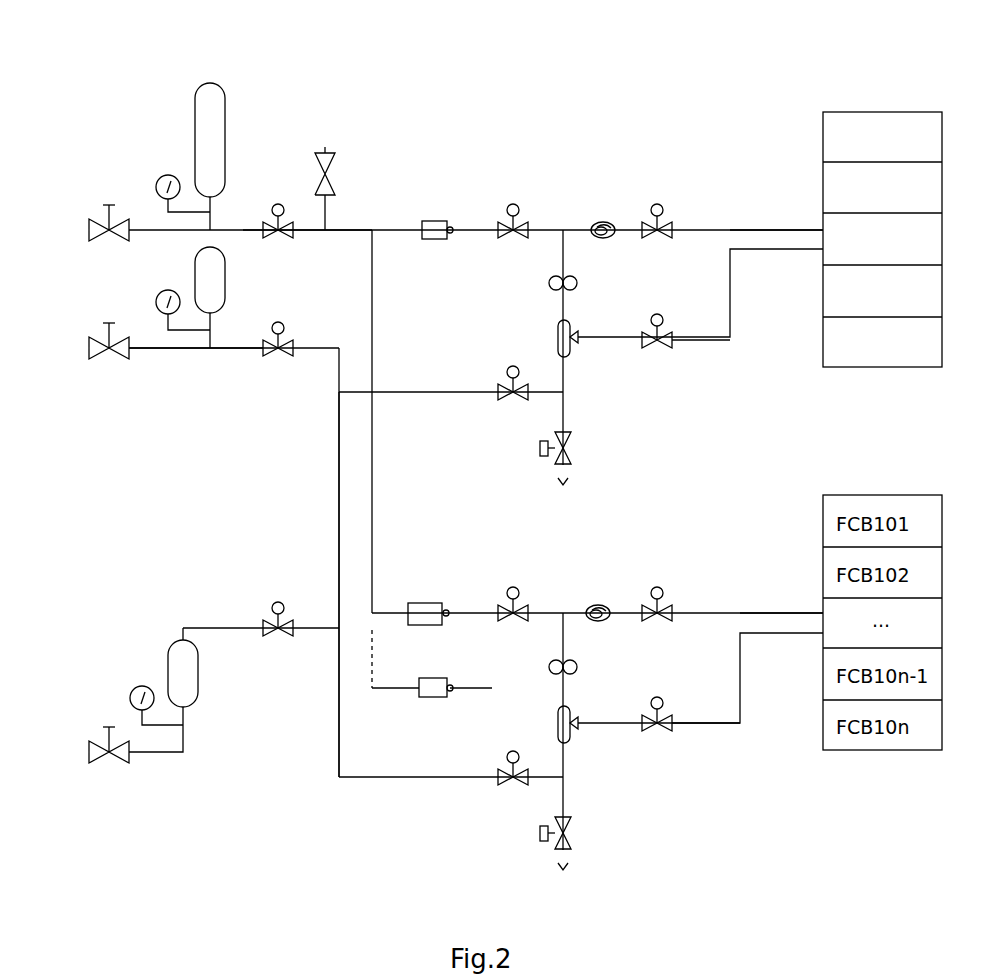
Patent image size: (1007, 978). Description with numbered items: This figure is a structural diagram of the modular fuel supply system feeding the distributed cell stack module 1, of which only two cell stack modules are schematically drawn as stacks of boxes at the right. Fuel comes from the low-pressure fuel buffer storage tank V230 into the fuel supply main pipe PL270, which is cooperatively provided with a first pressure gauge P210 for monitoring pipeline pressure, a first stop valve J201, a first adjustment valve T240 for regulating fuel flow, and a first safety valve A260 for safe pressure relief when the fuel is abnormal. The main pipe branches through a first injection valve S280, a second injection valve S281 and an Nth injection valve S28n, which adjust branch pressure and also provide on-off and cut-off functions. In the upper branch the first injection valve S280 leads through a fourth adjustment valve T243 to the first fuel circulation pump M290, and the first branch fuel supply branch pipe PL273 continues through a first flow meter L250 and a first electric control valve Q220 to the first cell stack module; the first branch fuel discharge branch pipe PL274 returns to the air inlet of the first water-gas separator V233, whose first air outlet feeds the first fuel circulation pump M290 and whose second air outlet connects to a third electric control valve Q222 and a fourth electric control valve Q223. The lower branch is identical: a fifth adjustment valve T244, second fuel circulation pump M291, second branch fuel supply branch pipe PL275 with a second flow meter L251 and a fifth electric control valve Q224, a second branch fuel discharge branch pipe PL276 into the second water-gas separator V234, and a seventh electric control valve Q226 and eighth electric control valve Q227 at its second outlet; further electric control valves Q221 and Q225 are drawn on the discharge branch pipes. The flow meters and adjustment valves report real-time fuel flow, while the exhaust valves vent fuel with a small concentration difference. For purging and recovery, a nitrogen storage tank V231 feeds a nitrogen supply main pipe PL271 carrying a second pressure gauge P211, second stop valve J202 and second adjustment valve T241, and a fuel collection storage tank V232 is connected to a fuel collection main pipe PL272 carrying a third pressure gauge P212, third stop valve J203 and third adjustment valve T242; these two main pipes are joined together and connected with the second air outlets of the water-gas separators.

The distributed cell stack module 1 is at (912, 112).
The first stop valve J201 is at (109, 205).
The second stop valve J202 is at (109, 323).
The third stop valve J203 is at (109, 727).
The first pressure gauge P210 is at (168, 177).
The second pressure gauge P211 is at (168, 290).
The third pressure gauge P212 is at (142, 686).
The low-pressure fuel buffer storage tank V230 is at (208, 83).
The nitrogen storage tank V231 is at (285, 300).
The fuel collection storage tank V232 is at (258, 665).
The first adjustment valve T240 is at (280, 203).
The second adjustment valve T241 is at (290, 357).
The third adjustment valve T242 is at (278, 600).
The fourth adjustment valve T243 is at (575, 190).
The fifth adjustment valve T244 is at (575, 558).
The first safety valve A260 is at (325, 153).
The fuel supply main pipe PL270 is at (250, 240).
The nitrogen supply main pipe PL271 is at (178, 352).
The fuel collection main pipe PL272 is at (332, 625).
The first branch fuel supply branch pipe PL273 is at (805, 190).
The first branch fuel discharge branch pipe PL274 is at (760, 360).
The second branch fuel supply branch pipe PL275 is at (805, 575).
The second branch fuel discharge branch pipe PL276 is at (695, 725).
The first injection valve S280 is at (485, 195).
The second injection valve S281 is at (470, 580).
The sensor S28n is at (490, 656).
The first flow meter L250 is at (640, 190).
The second flow meter L251 is at (598, 604).
The first electric control valve Q220 is at (720, 190).
The valve Q221 is at (720, 303).
The third electric control valve Q222 is at (513, 364).
The fourth electric control valve Q223 is at (640, 436).
The fifth electric control valve Q224 is at (700, 570).
The valve Q225 is at (700, 672).
The seventh electric control valve Q226 is at (513, 750).
The eighth electric control valve Q227 is at (640, 817).
The first fuel circulation pump M290 is at (556, 280).
The second fuel circulation pump M291 is at (556, 664).
The first water-gas separator V233 is at (625, 325).
The second water-gas separator V234 is at (625, 710).